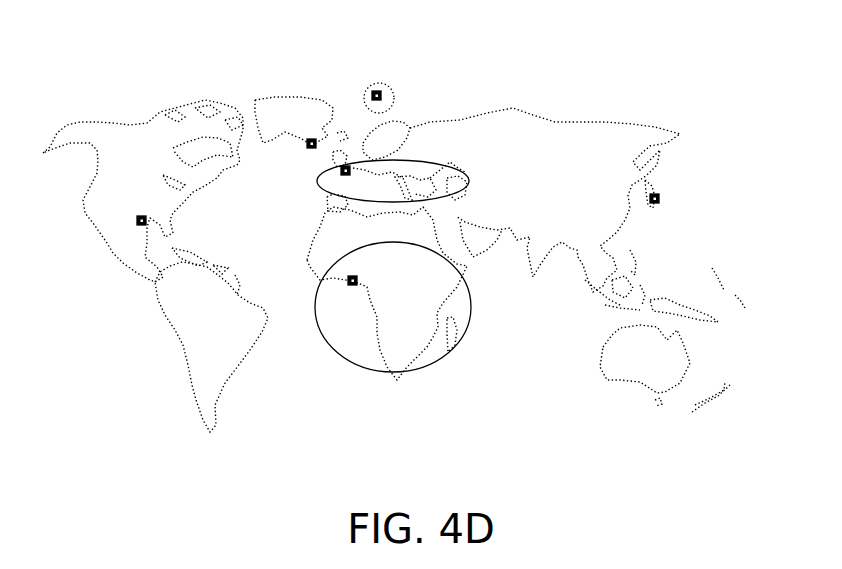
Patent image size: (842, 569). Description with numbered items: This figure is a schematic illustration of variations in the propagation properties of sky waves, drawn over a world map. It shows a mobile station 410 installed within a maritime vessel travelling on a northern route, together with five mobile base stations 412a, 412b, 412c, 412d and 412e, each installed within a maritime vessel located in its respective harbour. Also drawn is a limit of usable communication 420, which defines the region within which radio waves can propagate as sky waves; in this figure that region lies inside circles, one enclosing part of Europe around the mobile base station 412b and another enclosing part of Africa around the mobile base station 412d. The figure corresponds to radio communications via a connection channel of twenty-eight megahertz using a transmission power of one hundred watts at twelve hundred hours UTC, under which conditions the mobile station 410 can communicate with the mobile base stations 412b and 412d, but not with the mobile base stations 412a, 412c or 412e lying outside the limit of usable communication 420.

The mobile station 410 is at (386, 64).
The mobile base station 412a is at (285, 107).
The mobile base station 412b is at (305, 201).
The mobile base station 412c is at (118, 259).
The mobile base station 412d is at (332, 317).
The mobile base station 412e is at (699, 178).
The limit of usable communication 420 is at (412, 248).